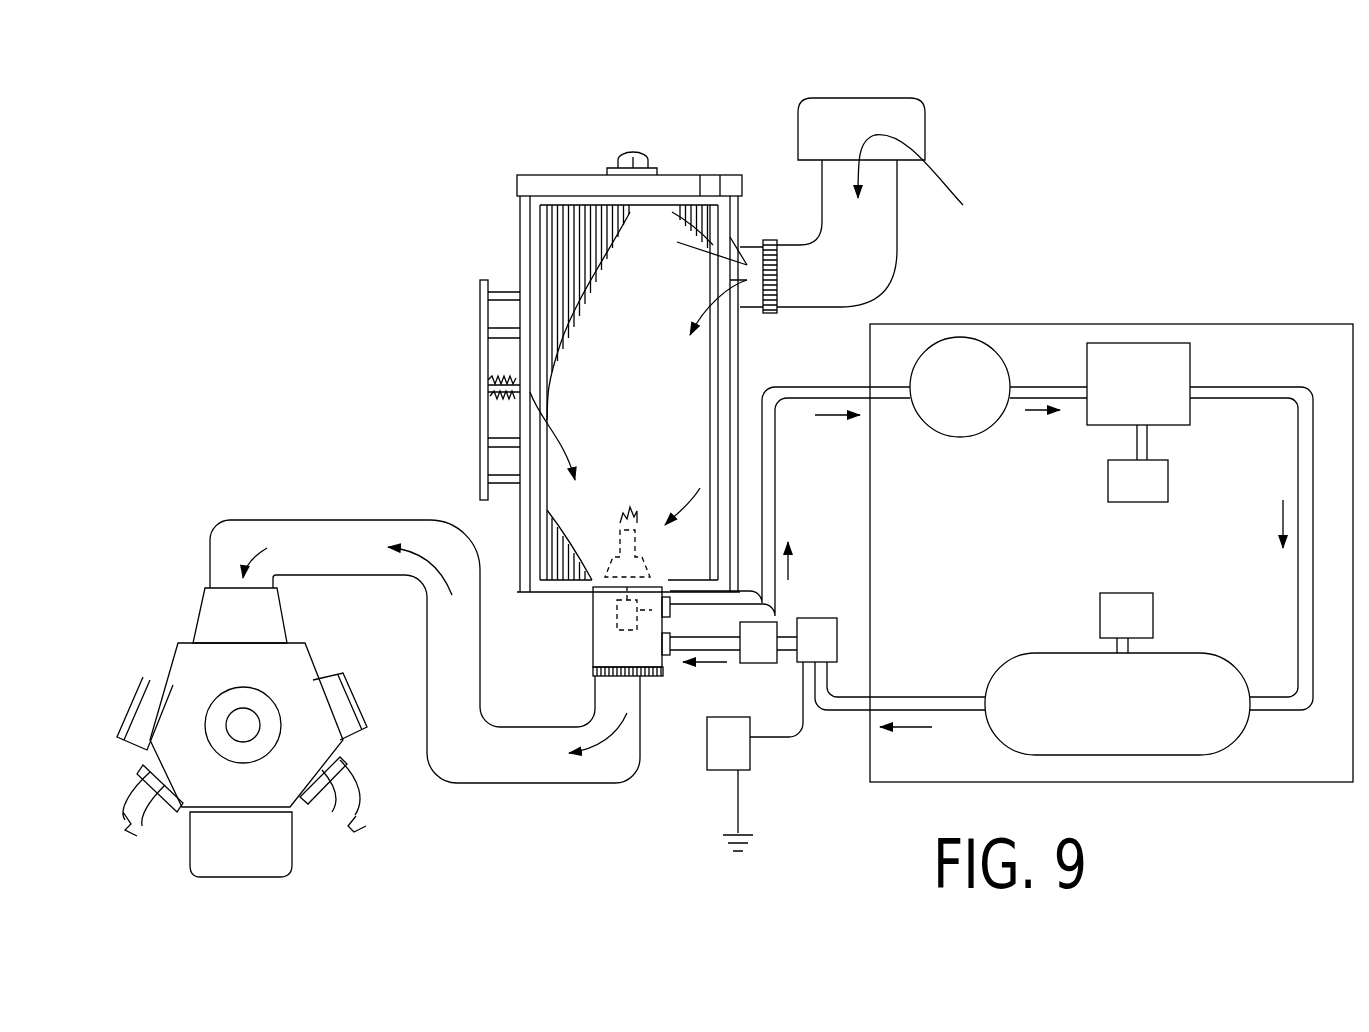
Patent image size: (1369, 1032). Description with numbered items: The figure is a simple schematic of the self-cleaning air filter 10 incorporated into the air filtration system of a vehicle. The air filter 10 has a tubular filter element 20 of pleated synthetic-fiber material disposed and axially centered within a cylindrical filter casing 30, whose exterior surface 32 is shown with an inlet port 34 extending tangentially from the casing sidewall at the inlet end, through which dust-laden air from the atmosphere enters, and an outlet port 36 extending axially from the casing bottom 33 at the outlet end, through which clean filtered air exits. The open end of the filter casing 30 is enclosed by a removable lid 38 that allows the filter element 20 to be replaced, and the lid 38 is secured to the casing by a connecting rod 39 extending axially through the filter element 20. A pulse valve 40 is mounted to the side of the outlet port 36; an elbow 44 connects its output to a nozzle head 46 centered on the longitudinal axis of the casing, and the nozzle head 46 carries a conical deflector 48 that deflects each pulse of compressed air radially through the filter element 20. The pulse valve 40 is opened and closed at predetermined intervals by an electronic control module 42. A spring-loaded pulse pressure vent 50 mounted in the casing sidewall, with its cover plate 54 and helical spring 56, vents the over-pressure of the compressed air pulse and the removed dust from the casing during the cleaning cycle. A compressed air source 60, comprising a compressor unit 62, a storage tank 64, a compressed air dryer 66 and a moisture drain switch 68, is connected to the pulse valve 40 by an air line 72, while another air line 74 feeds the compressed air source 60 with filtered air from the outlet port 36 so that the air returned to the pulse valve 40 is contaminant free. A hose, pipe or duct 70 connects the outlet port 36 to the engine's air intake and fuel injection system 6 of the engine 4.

The self-cleaning air filter 10 is at (413, 187).
The tubular filter element 20 is at (577, 243).
The filter casing 30 is at (513, 232).
The exterior surface 32 is at (735, 360).
The casing bottom 33 is at (530, 593).
The inlet port 34 is at (748, 250).
The outlet port 36 is at (595, 673).
The removable lid 38 is at (688, 188).
The connecting rod 39 is at (638, 512).
The pulse valve 40 is at (757, 650).
The electronic control module 42 is at (733, 747).
The elbow 44 is at (630, 650).
The nozzle head 46 is at (627, 608).
The conical deflector 48 is at (617, 563).
The pulse pressure vent 50 is at (477, 398).
The cover plate 54 is at (482, 432).
The helical spring 56 is at (497, 380).
The compressed air source 60 is at (1141, 320).
The compressor unit 62 is at (960, 398).
The storage tank 64 is at (1140, 697).
The compressed air dryer 66 is at (1165, 368).
The moisture drain switch 68 is at (1150, 480).
The hose, pipe or duct 70 is at (472, 747).
The air line 72 is at (847, 707).
The air line 74 is at (770, 512).
The engine 4 is at (283, 672).
The air intake and fuel injection system 6 is at (260, 613).